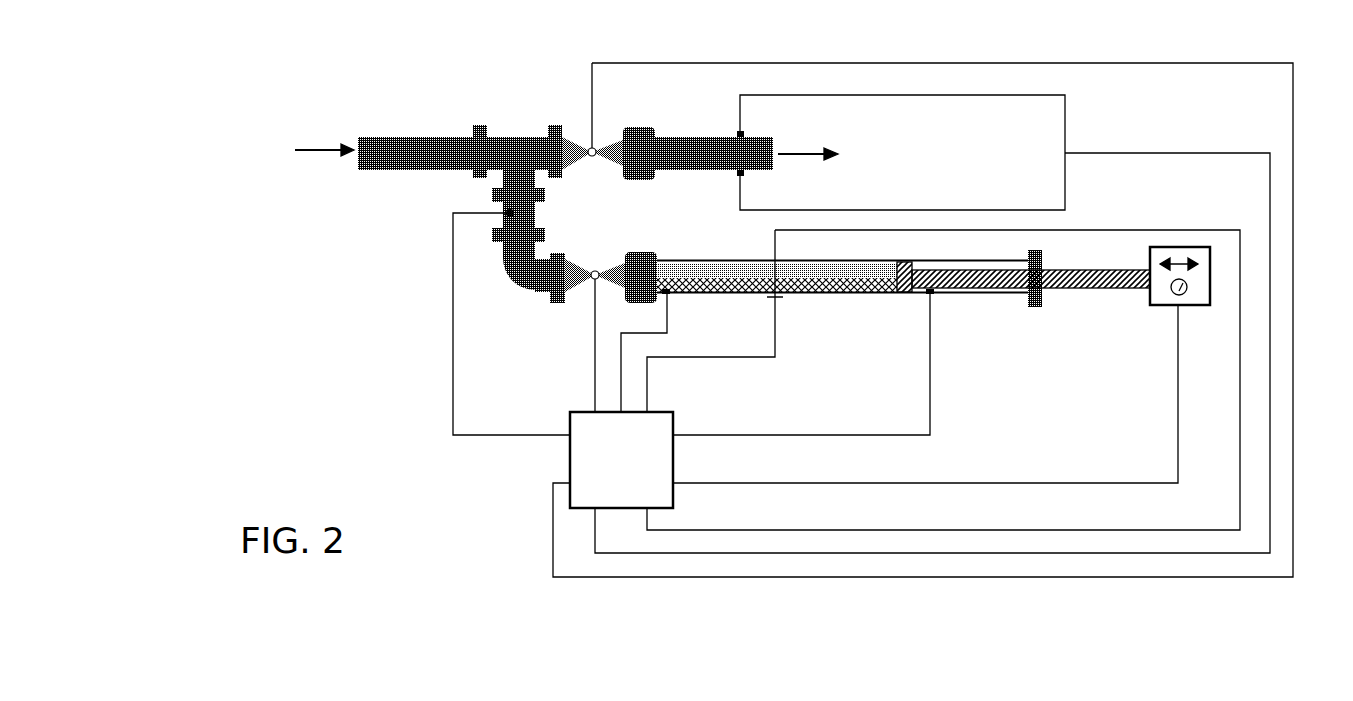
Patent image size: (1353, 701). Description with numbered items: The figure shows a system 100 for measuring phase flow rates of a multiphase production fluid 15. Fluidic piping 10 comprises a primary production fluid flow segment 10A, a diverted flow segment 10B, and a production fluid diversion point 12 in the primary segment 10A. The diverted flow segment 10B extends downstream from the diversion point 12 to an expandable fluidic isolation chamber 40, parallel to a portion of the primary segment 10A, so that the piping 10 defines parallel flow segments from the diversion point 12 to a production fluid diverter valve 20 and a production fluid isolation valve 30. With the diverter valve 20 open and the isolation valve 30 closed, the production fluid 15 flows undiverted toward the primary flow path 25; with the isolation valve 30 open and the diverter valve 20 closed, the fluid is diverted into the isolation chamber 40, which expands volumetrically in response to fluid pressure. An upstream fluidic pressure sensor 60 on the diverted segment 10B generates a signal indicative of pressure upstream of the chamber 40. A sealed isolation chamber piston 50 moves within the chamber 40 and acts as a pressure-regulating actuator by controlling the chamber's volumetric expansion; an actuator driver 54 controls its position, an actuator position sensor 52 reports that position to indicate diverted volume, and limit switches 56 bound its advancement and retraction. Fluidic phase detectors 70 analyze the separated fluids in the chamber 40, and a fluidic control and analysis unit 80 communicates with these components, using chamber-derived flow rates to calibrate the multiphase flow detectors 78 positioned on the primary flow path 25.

The system 100 is at (316, 357).
The multiphase production fluid 15 is at (322, 150).
The fluidic piping 10 is at (420, 137).
The production fluid diversion point 12 is at (515, 137).
The primary production fluid flow segment 10A is at (537, 150).
The diverted flow segment 10B is at (517, 177).
The upstream fluidic pressure sensor 60 is at (512, 213).
The production fluid diverter valve 20 is at (592, 156).
The calibrated multiphase flow detector 78 is at (738, 133).
The primary flow path 25 is at (800, 157).
The production fluid isolation valve 30 is at (596, 283).
The expandable fluidic isolation chamber 40 is at (812, 294).
The fluidic phase detectors 70 is at (773, 257).
The limit switches 56 is at (667, 292).
The sealed isolation chamber piston 50 is at (1075, 289).
The actuator driver 54 is at (1180, 250).
The actuator position sensor 52 is at (1178, 300).
The fluidic control and analysis unit 80 is at (568, 448).